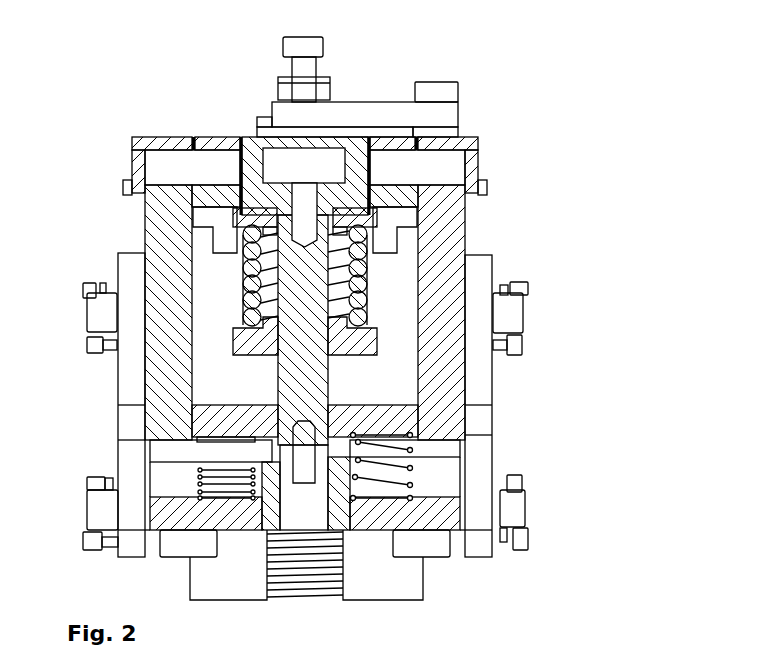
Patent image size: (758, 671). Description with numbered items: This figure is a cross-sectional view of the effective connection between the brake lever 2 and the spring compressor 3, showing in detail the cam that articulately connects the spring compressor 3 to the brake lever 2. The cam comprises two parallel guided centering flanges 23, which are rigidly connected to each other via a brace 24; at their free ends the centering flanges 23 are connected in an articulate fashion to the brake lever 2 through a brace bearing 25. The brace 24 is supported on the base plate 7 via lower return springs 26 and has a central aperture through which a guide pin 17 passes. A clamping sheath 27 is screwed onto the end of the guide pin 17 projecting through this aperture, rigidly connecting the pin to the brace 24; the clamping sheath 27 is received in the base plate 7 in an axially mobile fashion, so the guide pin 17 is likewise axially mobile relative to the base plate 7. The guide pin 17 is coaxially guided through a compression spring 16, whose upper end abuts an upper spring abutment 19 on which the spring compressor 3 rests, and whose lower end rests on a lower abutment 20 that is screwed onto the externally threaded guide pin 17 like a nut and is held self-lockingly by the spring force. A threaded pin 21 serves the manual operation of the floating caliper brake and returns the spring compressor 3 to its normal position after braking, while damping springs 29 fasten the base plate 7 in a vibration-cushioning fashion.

The brake lever 2 is at (395, 141).
The spring compressor 3 is at (350, 138).
The base plate 7 is at (428, 508).
The compression spring 16 is at (366, 276).
The guide pin 17 is at (308, 381).
The upper spring abutment 19 is at (449, 222).
The lower abutment 20 is at (368, 337).
The threaded pin 21 is at (311, 70).
The centering flanges 23 is at (152, 243).
The brace 24 is at (392, 415).
The brace bearing 25 is at (163, 157).
The lower return springs 26 is at (197, 480).
The clamping sheath 27 is at (354, 467).
The damping springs 29 is at (350, 578).